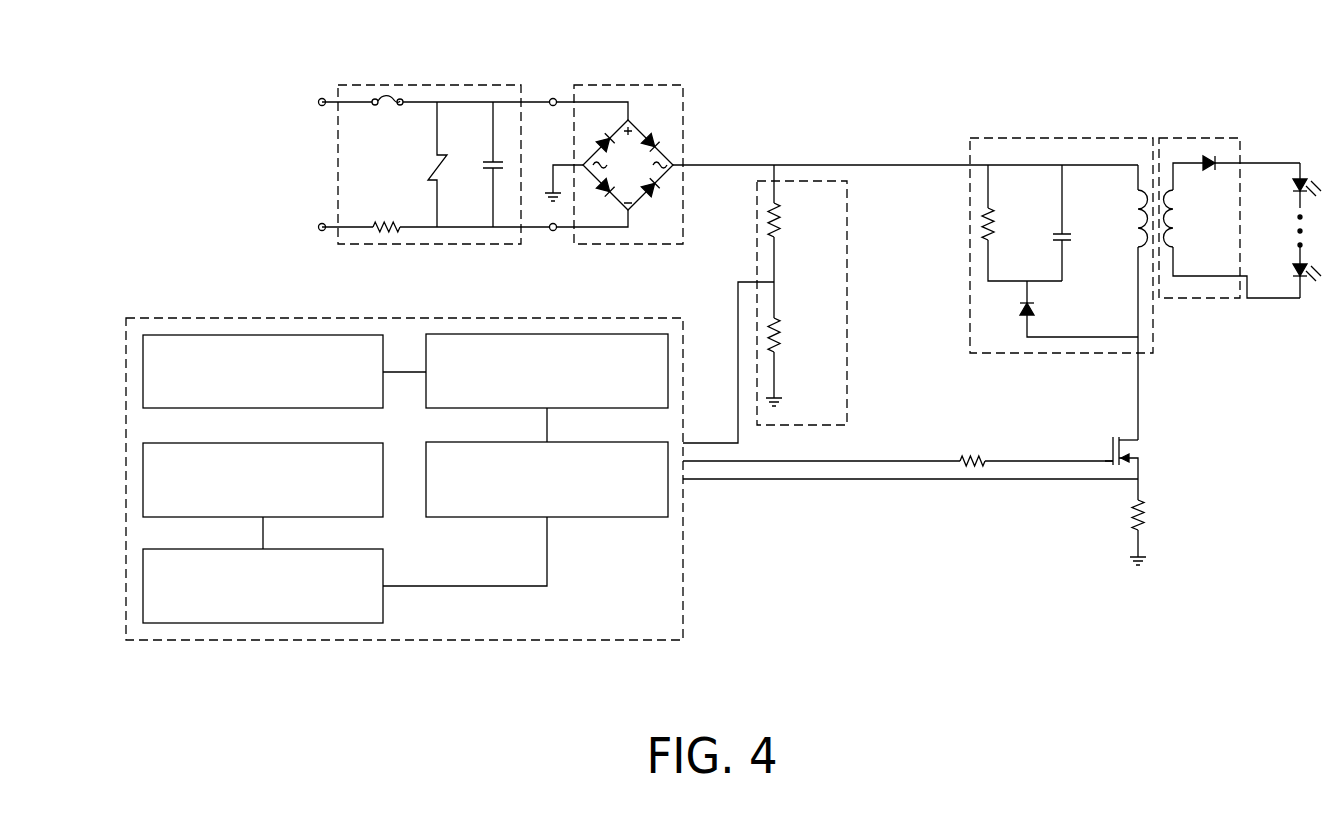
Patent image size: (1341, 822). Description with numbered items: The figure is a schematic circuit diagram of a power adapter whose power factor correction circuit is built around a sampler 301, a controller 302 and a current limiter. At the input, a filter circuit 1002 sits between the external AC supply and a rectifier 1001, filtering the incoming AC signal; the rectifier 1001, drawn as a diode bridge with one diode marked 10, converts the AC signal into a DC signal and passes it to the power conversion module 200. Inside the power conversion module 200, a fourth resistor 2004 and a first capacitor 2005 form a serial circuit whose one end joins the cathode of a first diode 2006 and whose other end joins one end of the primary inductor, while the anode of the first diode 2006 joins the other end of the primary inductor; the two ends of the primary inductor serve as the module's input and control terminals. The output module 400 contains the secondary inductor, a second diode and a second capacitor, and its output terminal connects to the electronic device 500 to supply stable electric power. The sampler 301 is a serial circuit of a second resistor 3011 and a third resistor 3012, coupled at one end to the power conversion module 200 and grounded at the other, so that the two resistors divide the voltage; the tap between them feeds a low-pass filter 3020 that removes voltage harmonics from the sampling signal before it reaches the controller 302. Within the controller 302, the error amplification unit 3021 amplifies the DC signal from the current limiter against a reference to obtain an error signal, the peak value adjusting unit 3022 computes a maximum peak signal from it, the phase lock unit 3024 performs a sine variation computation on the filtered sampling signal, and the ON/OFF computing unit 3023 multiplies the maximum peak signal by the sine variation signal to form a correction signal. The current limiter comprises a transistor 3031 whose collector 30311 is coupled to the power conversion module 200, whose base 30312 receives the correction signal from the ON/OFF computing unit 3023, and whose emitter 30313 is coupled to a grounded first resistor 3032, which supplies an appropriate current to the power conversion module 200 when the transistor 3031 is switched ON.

The filter circuit 1002 is at (429, 85).
The rectifier 1001 is at (614, 135).
The rectifier diode 10 is at (659, 144).
The sampler 301 is at (801, 304).
The second resistor 3011 is at (804, 215).
The third resistor 3012 is at (804, 331).
The power conversion module 200 is at (1061, 259).
The fourth resistor 2004 is at (1018, 216).
The first capacitor 2005 is at (1089, 253).
The first diode 2006 is at (1059, 309).
The output module 400 is at (1193, 138).
The electronic device 500 is at (1301, 163).
The controller 302 is at (583, 519).
The low pass filter 3020 is at (143, 366).
The error amplification unit 3021 is at (143, 474).
The peak value adjusting unit 3022 is at (143, 582).
The ON/OFF computing unit 3023 is at (668, 385).
The phase lock unit 3024 is at (628, 517).
The transistor 3031 is at (1087, 437).
The collector 30311 is at (1166, 421).
The base 30312 is at (1067, 449).
The emitter 30313 is at (1166, 457).
The first resistor 3032 is at (1109, 522).